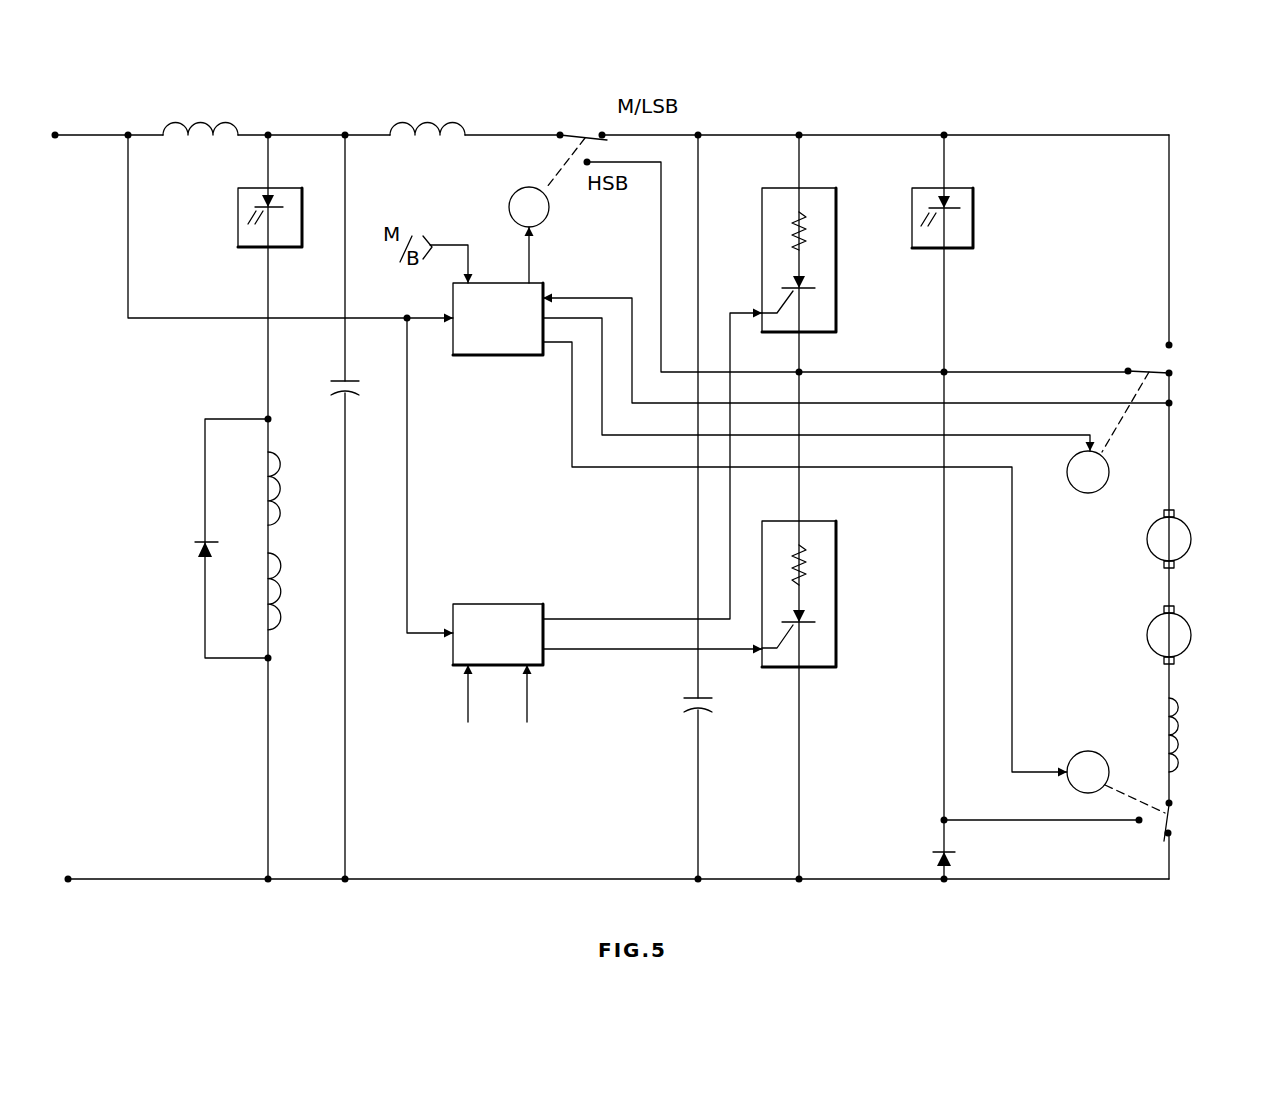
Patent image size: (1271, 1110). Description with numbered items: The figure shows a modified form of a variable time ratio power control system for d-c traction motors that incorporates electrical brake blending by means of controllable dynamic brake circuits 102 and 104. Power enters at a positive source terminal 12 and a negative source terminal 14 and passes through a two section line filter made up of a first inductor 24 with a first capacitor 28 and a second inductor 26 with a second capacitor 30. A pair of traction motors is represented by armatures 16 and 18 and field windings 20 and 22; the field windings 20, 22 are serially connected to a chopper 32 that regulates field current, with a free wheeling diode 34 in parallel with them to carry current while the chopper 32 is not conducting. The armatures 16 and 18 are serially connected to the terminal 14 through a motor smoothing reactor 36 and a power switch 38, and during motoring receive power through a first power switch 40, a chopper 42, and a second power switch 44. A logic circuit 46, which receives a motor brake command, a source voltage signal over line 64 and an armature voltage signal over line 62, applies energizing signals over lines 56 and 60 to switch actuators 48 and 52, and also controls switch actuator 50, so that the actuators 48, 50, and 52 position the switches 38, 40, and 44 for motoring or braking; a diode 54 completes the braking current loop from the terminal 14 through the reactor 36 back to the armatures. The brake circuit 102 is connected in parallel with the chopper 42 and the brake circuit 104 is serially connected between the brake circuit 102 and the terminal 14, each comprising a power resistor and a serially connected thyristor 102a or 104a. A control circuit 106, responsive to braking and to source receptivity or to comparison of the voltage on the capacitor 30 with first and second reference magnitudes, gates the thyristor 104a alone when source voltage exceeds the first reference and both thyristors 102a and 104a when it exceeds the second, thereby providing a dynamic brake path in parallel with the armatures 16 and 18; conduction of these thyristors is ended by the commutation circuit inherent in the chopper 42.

The first source terminal 12 is at (55, 133).
The second source terminal 14 is at (70, 886).
The armature 16 is at (1188, 534).
The armature 18 is at (1188, 632).
The field winding 20 is at (283, 499).
The field winding 22 is at (283, 594).
The first inductor 24 is at (211, 129).
The second inductor 26 is at (443, 129).
The first capacitor 28 is at (362, 391).
The second capacitor 30 is at (688, 705).
The chopper 32 is at (238, 207).
The free wheeling diode 34 is at (196, 545).
The motor smoothing reactor 36 is at (1183, 732).
The power switch 38 is at (1178, 822).
The first power switch 40 is at (577, 129).
The chopper 42 is at (975, 220).
The second power switch 44 is at (1163, 360).
The logic circuit 46 is at (521, 358).
The switch actuator 48 is at (1080, 756).
The switch actuator 50 is at (510, 200).
The switch actuator 52 is at (1082, 493).
The diode 54 is at (933, 856).
The line 56 is at (1012, 650).
The line 60 is at (1057, 437).
The line 62 is at (615, 303).
The line 64 is at (128, 247).
The dynamic brake circuit 102 is at (833, 242).
The thyristor 102a is at (815, 289).
The dynamic brake circuit 104 is at (834, 585).
The thyristor 104a is at (815, 623).
The control circuit 106 is at (510, 592).